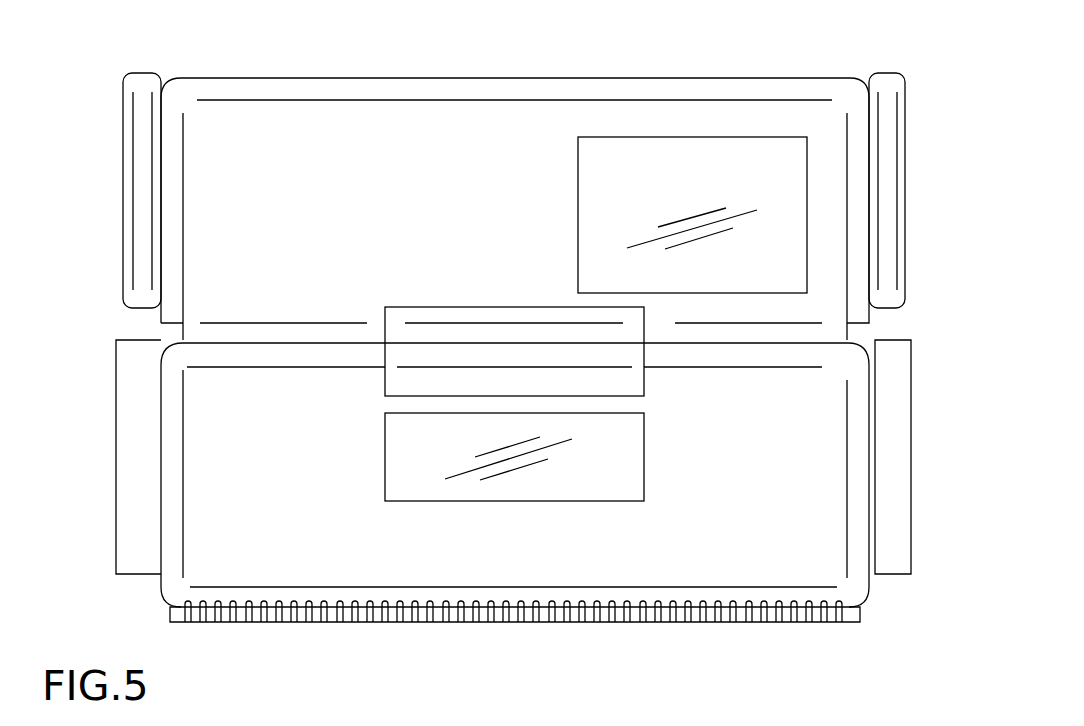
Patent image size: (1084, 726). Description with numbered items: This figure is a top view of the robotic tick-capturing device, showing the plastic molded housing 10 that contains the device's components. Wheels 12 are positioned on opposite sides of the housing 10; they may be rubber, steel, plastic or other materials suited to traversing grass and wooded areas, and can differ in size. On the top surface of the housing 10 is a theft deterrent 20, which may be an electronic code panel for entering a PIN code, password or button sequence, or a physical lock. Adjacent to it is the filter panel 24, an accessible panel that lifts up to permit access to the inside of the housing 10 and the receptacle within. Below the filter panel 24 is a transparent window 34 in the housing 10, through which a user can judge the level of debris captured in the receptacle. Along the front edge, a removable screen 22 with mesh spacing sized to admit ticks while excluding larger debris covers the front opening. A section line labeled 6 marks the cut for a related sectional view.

The housing 10 is at (420, 90).
The wheels 12 is at (143, 87).
The theft deterrent 20 is at (623, 153).
The filter panel 24 is at (480, 333).
The transparent window 34 is at (408, 483).
The screen 22 is at (750, 625).
The section line 6- 6 is at (262, 62).